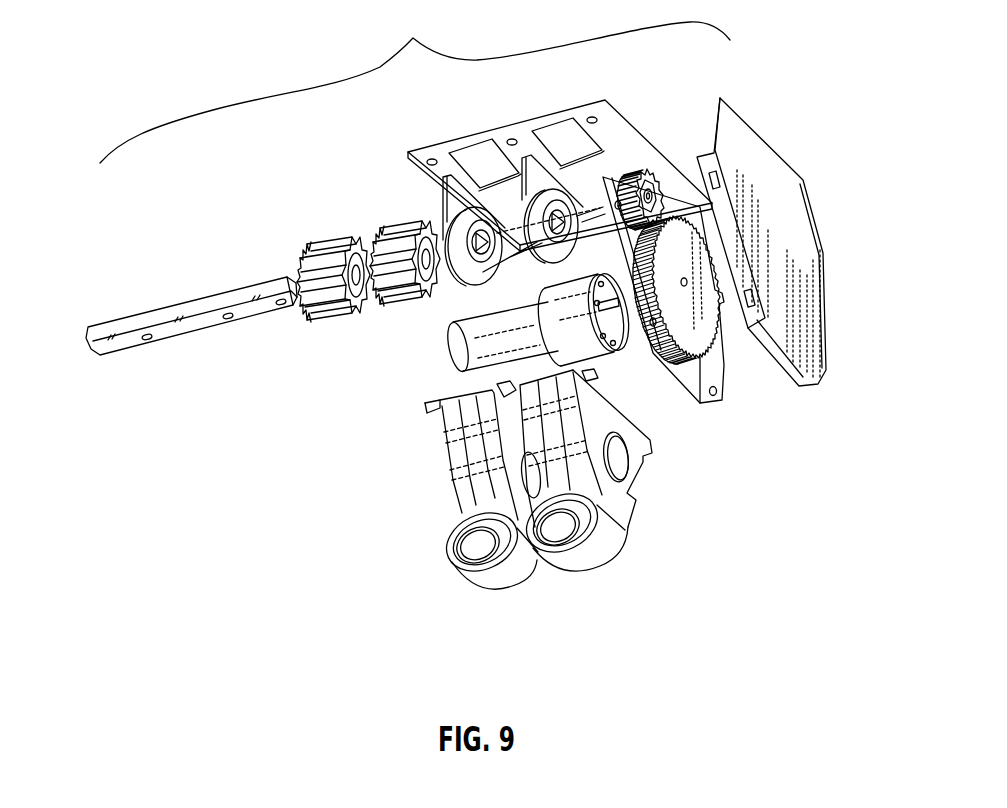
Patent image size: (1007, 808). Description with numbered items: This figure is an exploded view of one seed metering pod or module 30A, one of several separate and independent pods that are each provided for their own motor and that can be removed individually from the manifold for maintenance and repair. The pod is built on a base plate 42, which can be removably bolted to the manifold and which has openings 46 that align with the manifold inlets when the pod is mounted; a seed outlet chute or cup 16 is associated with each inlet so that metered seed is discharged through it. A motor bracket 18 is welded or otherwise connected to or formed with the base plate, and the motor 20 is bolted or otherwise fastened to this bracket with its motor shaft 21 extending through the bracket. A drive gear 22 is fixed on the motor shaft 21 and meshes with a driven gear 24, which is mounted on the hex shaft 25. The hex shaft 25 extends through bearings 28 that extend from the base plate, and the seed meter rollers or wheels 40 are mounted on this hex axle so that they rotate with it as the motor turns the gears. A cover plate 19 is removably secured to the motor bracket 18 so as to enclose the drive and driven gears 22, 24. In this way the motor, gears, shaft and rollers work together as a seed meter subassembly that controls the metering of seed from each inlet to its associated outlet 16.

The pod or module 30A is at (351, 164).
The hex shaft 25 is at (195, 332).
The seed meter rollers or wheels 40 is at (330, 323).
The base plate 42 is at (613, 122).
The openings 46 is at (487, 155).
The bearings 28 is at (543, 273).
The motor 20 is at (457, 357).
The motor shaft 21 is at (620, 340).
The driven gear 24 is at (652, 178).
The drive gear 22 is at (697, 337).
The motor bracket 18 is at (700, 368).
The cover plate 19 is at (813, 318).
The seed outlet chute or cup 16 is at (513, 572).